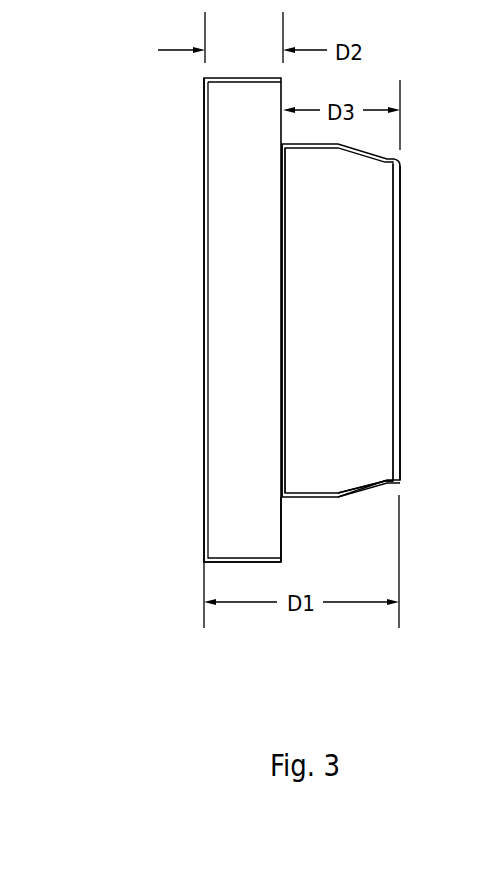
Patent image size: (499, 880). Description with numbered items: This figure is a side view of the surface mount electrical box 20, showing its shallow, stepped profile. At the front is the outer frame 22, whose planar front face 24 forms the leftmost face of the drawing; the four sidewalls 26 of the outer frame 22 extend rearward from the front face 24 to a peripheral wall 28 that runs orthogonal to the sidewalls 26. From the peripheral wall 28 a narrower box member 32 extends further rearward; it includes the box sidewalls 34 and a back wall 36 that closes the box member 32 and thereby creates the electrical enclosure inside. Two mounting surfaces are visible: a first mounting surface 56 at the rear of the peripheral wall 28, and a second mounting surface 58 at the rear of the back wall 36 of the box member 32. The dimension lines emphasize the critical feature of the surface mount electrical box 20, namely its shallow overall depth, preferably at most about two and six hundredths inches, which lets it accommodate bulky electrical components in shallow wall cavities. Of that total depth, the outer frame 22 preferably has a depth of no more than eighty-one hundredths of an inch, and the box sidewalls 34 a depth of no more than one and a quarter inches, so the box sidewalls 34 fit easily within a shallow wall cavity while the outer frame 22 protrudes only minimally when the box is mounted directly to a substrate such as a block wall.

The surface mount electrical box 20 is at (143, 132).
The outer frame 22 is at (218, 548).
The planar front face 24 is at (203, 348).
The sidewalls 26 is at (256, 343).
The peripheral wall 28 is at (285, 233).
The box member 32 is at (372, 458).
The box sidewalls 34 is at (356, 343).
The back wall 36 is at (395, 420).
The first mounting surface 56 is at (280, 518).
The second mounting surface 58 is at (400, 285).